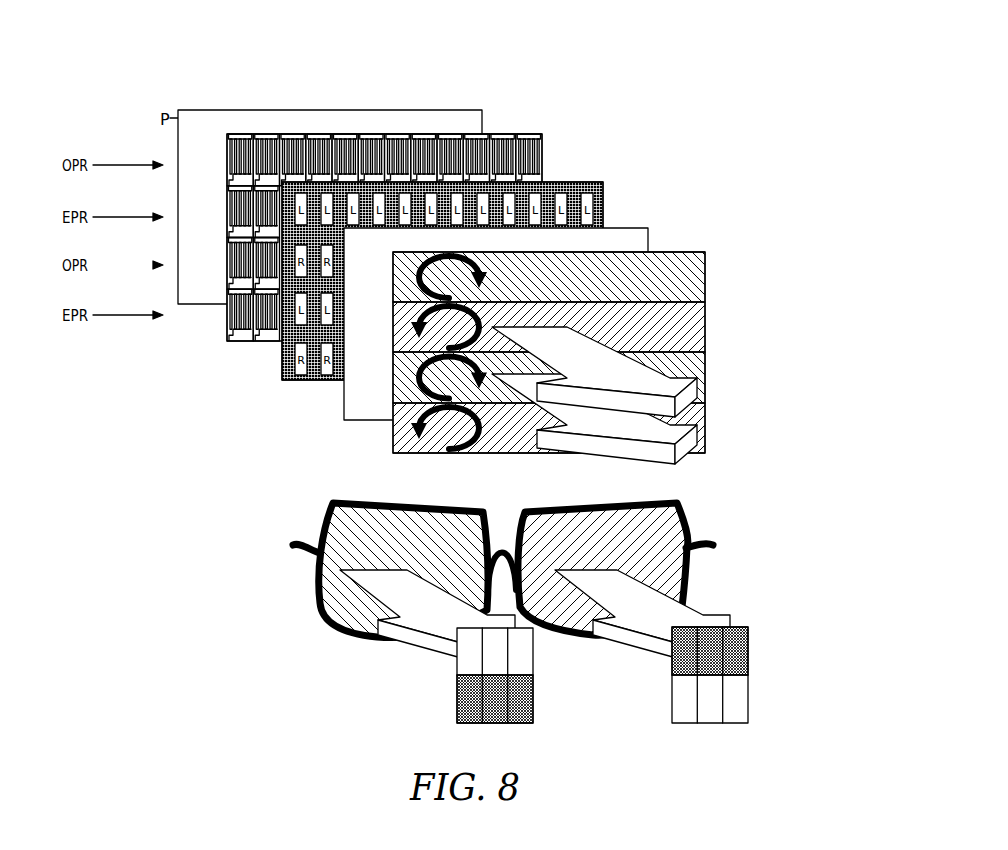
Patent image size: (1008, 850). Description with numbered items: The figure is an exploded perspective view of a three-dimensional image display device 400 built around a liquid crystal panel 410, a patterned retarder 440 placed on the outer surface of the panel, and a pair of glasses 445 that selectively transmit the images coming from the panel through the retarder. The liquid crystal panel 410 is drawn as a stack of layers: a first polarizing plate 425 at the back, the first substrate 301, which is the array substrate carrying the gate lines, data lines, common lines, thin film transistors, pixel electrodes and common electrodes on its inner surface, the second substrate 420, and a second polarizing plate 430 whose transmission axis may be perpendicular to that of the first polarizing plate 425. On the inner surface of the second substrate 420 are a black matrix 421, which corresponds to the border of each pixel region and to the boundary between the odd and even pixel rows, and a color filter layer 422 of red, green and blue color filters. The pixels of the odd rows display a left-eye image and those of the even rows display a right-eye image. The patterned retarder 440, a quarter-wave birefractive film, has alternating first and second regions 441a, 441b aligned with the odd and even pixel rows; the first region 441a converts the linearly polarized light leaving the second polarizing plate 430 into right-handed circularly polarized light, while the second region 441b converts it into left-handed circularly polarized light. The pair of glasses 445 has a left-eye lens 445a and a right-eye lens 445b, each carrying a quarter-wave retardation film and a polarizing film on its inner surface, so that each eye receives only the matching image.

The three-dimensional image display device 400 is at (696, 91).
The liquid crystal panel 410 is at (470, 57).
The second substrate 420 is at (573, 181).
The black matrix 421 is at (342, 177).
The color filter layer 422 is at (380, 197).
The first polarizing plate 425 is at (462, 110).
The first substrate 301 is at (507, 133).
The second polarizing plate 430 is at (629, 213).
The patterned retarder 440 is at (680, 235).
The first region 441a is at (707, 258).
The second region 441b is at (708, 309).
The pair of glasses 445 is at (317, 489).
The left-eye lens 445a is at (327, 573).
The right-eye lens 445b is at (681, 569).